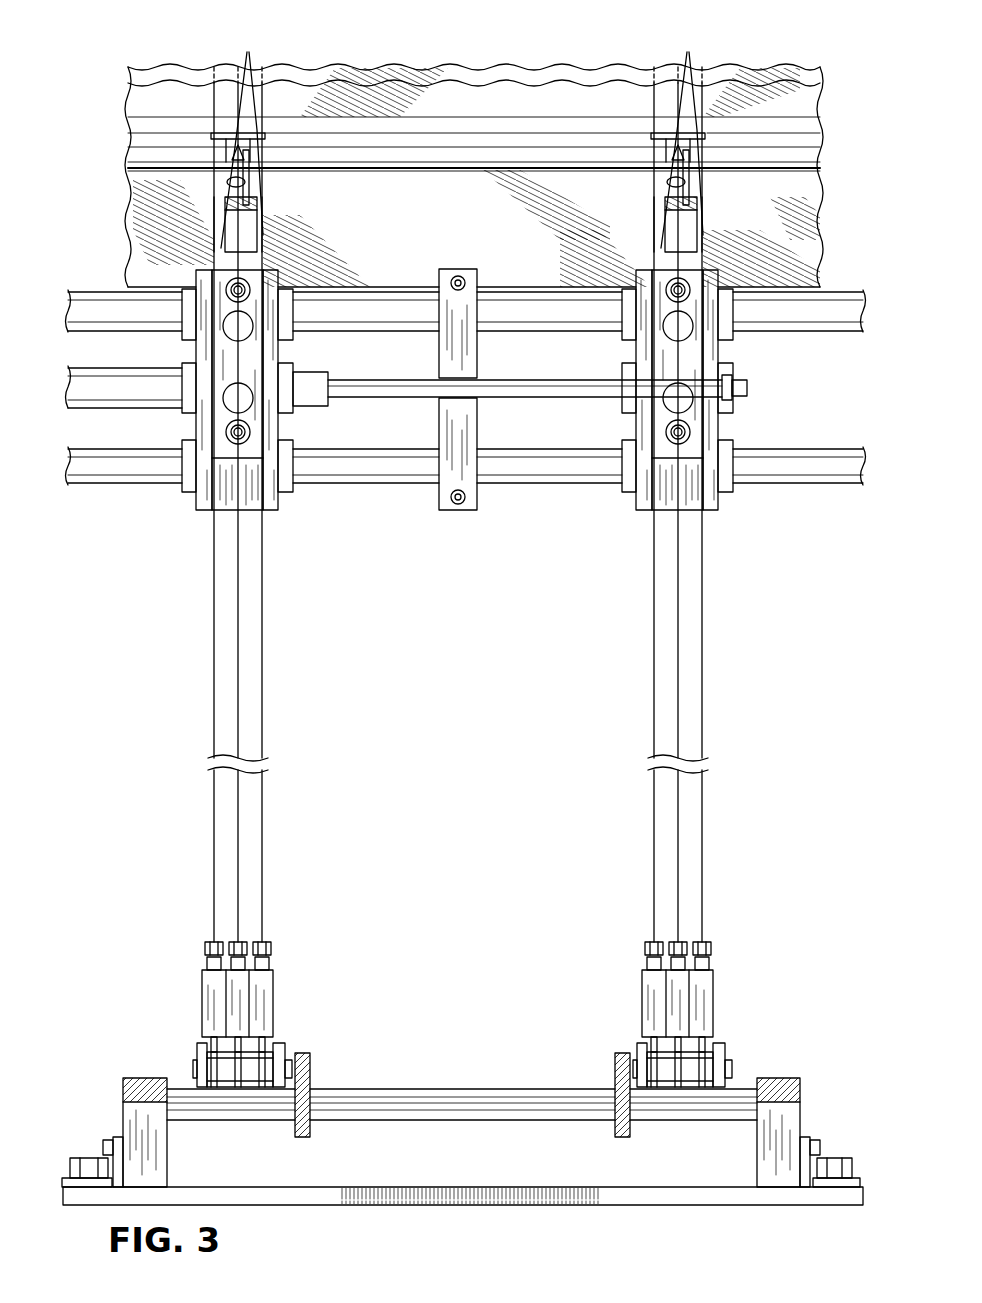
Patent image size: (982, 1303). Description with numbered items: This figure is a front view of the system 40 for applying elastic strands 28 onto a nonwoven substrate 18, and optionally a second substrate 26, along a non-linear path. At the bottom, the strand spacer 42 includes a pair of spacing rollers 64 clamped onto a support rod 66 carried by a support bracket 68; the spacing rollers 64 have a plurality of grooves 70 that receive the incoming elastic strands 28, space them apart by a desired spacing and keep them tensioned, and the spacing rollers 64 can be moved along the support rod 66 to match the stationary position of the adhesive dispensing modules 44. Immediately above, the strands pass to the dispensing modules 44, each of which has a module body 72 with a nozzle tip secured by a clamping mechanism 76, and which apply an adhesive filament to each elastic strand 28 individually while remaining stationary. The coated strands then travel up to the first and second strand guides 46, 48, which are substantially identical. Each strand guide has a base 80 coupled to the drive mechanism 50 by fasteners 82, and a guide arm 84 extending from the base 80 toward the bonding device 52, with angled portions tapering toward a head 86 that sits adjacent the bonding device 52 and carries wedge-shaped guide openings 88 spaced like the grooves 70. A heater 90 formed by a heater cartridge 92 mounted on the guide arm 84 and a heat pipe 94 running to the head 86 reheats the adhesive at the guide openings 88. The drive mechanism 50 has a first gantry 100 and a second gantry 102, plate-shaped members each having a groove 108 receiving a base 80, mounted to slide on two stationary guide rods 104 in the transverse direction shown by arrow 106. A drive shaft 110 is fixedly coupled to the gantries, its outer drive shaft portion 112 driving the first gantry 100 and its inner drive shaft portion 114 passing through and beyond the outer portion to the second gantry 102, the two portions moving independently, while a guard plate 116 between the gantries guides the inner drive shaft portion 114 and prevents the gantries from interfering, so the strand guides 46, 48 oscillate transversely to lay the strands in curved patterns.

The nonwoven substrate 18 is at (490, 80).
The second substrate 26 is at (470, 229).
The elastic strands 28 is at (237, 665).
The system 40 is at (768, 52).
The strand spacer 42 is at (462, 1121).
The adhesive dispensing modules 44 is at (460, 986).
The first strand guide 46 is at (226, 346).
The second strand guide 48 is at (666, 346).
The drive mechanism 50 is at (680, 425).
The bonding device 52 is at (125, 176).
The spacing rollers 64 is at (270, 1052).
The support rod 66 is at (458, 1088).
The support bracket 68 is at (540, 1186).
The grooves 70 is at (260, 1088).
The module body 72 is at (203, 1000).
The clamping mechanism 76 is at (205, 948).
The base 80 is at (262, 421).
The fasteners 82 is at (250, 289).
The guide arm 84 is at (268, 242).
The head 86 is at (228, 150).
The guide openings 88 is at (462, 137).
The heater 90 is at (259, 229).
The heater cartridge 92 is at (230, 238).
The heat pipe 94 is at (246, 183).
The first gantry 100 is at (203, 512).
The second gantry 102 is at (710, 512).
The guide rods 104 is at (818, 326).
The transverse direction arrow 106 is at (593, 406).
The groove 108 is at (270, 512).
The drive shaft 110 is at (142, 409).
The outer drive shaft portion 112 is at (318, 372).
The inner drive shaft portion 114 is at (380, 399).
The guard plate 116 is at (455, 511).